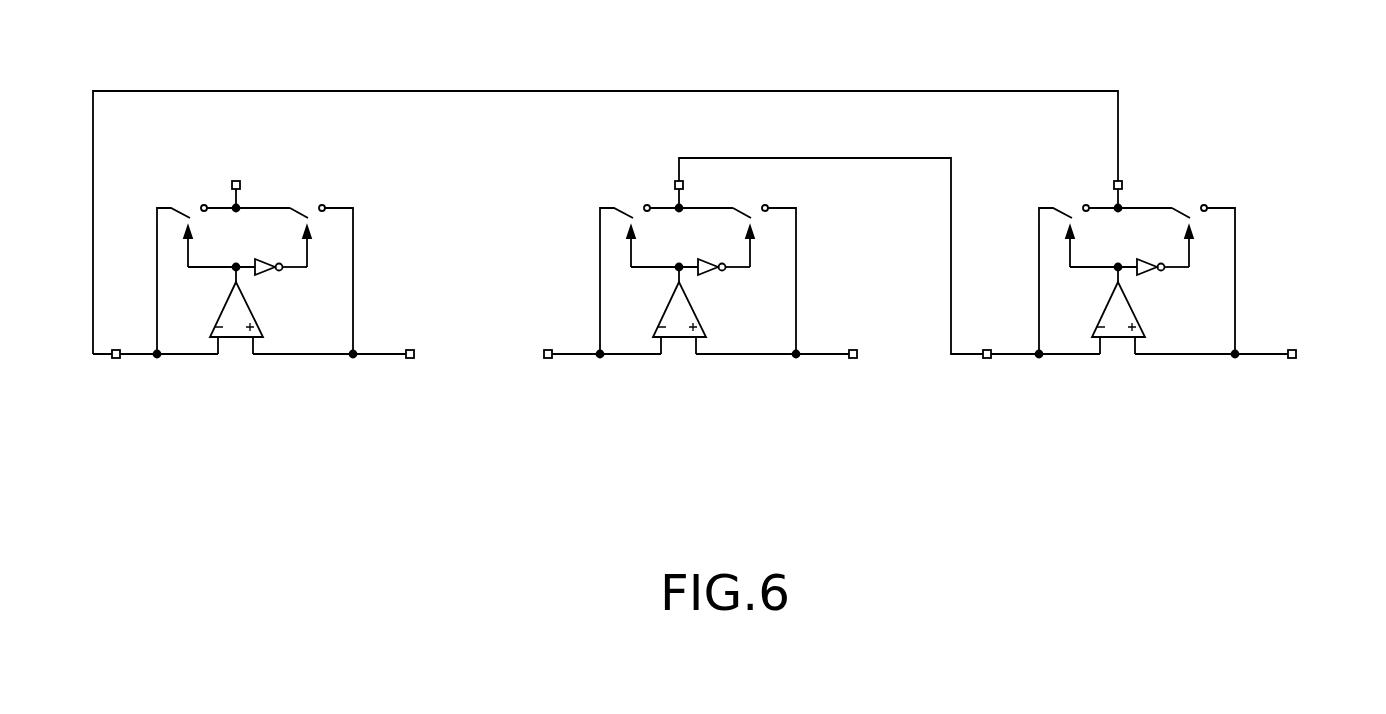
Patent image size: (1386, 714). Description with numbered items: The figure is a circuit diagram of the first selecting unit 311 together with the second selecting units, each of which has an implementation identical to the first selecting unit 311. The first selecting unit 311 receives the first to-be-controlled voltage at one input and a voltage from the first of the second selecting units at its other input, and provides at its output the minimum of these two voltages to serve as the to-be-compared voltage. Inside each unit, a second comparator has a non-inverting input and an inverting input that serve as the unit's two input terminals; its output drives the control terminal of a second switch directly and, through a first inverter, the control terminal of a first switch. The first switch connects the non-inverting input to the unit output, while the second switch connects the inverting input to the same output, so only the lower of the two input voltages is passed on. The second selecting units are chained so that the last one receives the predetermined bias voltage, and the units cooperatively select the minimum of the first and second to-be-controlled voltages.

The first selecting unit 311 is at (310, 321).